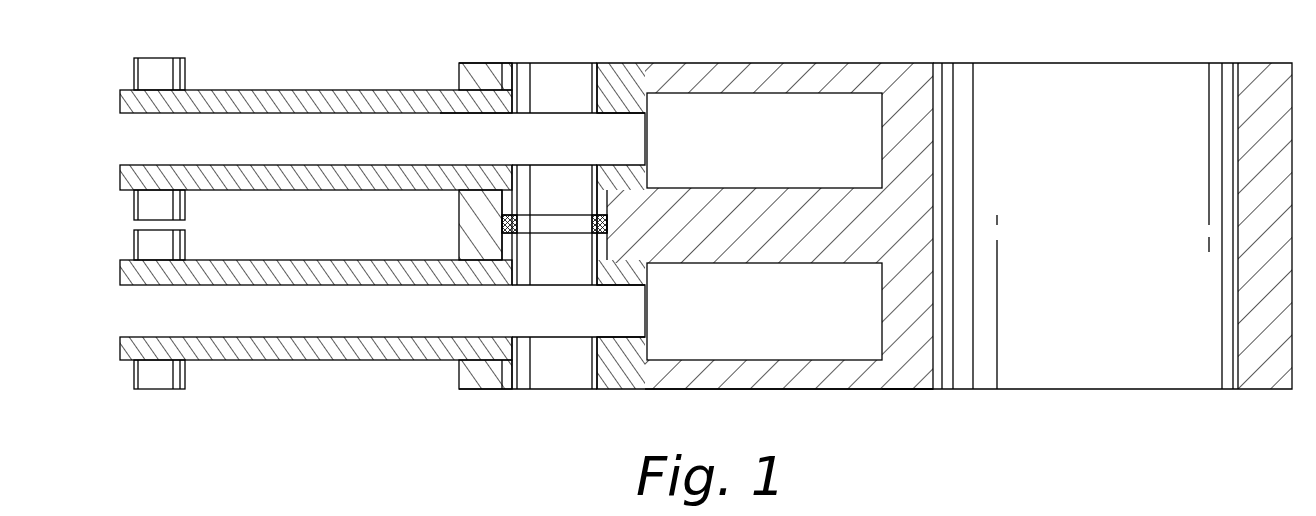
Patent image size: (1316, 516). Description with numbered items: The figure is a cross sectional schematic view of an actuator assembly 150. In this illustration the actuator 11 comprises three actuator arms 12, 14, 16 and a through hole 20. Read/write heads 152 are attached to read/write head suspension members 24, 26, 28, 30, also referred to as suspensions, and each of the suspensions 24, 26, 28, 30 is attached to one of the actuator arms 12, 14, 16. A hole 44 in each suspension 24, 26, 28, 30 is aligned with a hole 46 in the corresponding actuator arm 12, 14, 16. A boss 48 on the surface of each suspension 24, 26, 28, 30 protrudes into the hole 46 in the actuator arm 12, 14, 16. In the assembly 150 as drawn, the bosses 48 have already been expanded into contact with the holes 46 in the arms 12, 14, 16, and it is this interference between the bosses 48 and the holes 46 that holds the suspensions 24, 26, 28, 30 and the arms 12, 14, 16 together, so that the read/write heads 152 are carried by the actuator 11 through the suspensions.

The actuator 11 is at (920, 395).
The actuator arm 12 is at (758, 95).
The actuator arm 14 is at (775, 265).
The actuator arm 16 is at (787, 390).
The through hole 20 is at (1160, 92).
The read/write head suspension member 24 is at (323, 84).
The read/write head suspension member 26 is at (323, 160).
The read/write head suspension member 28 is at (323, 255).
The read/write head suspension member 30 is at (323, 332).
The hole 44 is at (533, 183).
The hole 46 is at (592, 78).
The boss 48 is at (530, 75).
The actuator assembly 150 is at (799, 238).
The read/write head 152 is at (133, 72).